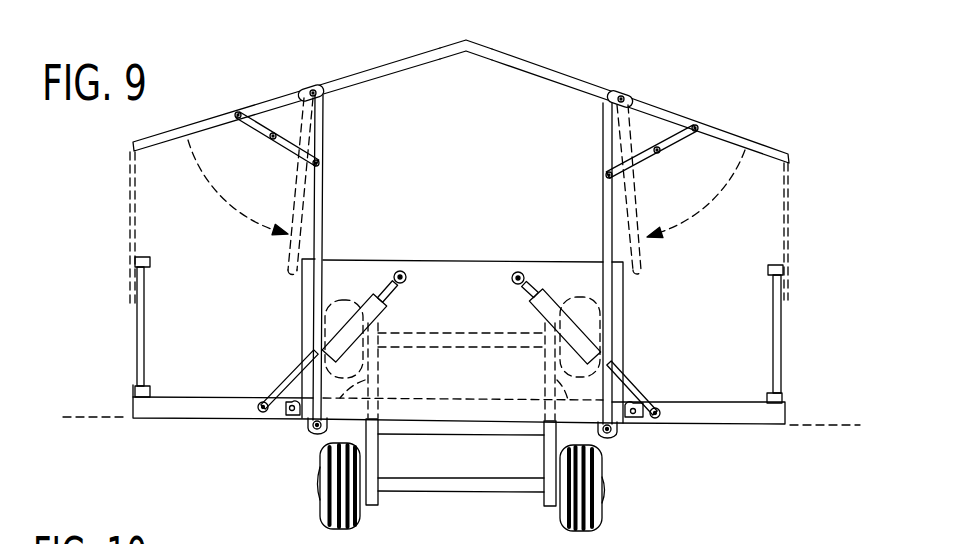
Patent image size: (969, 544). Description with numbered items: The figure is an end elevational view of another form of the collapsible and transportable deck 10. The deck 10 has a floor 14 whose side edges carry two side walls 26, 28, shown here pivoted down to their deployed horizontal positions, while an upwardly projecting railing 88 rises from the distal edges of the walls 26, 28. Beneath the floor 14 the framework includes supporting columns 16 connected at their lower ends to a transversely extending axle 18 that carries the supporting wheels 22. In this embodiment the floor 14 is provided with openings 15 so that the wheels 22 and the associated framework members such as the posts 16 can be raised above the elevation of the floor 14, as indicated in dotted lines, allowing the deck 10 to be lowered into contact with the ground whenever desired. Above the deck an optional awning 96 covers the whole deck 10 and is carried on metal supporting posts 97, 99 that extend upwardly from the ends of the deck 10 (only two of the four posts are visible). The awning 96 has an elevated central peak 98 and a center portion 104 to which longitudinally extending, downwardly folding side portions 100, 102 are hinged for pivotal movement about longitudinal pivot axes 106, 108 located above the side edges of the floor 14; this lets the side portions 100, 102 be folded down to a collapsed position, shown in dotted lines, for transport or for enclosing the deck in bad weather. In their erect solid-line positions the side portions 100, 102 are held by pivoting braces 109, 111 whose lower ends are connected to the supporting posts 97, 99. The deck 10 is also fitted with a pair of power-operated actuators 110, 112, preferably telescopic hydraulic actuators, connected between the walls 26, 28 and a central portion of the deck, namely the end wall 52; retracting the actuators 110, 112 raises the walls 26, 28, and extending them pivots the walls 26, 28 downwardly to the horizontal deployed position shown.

The deck 10 is at (809, 339).
The floor 14 is at (428, 397).
The openings 15 is at (383, 376).
The supporting columns 16 is at (378, 455).
The axle 18 is at (437, 495).
The supporting wheels 22 is at (323, 460).
The wall 26 is at (672, 400).
The wall 28 is at (192, 402).
The end wall 52 is at (447, 272).
The railing 88 is at (144, 322).
The awning 96 is at (422, 57).
The supporting post 97 is at (323, 133).
The central peak 98 is at (467, 42).
The supporting post 99 is at (602, 149).
The side portion 100 is at (215, 113).
The side portion 102 is at (713, 123).
The center portion 104 is at (380, 66).
The pivot axis 106 is at (313, 88).
The pivot axis 108 is at (627, 97).
The pivoting brace 109 is at (261, 128).
The power-operated actuator 110 is at (377, 290).
The pivoting brace 111 is at (667, 145).
The power-operated actuator 112 is at (543, 287).